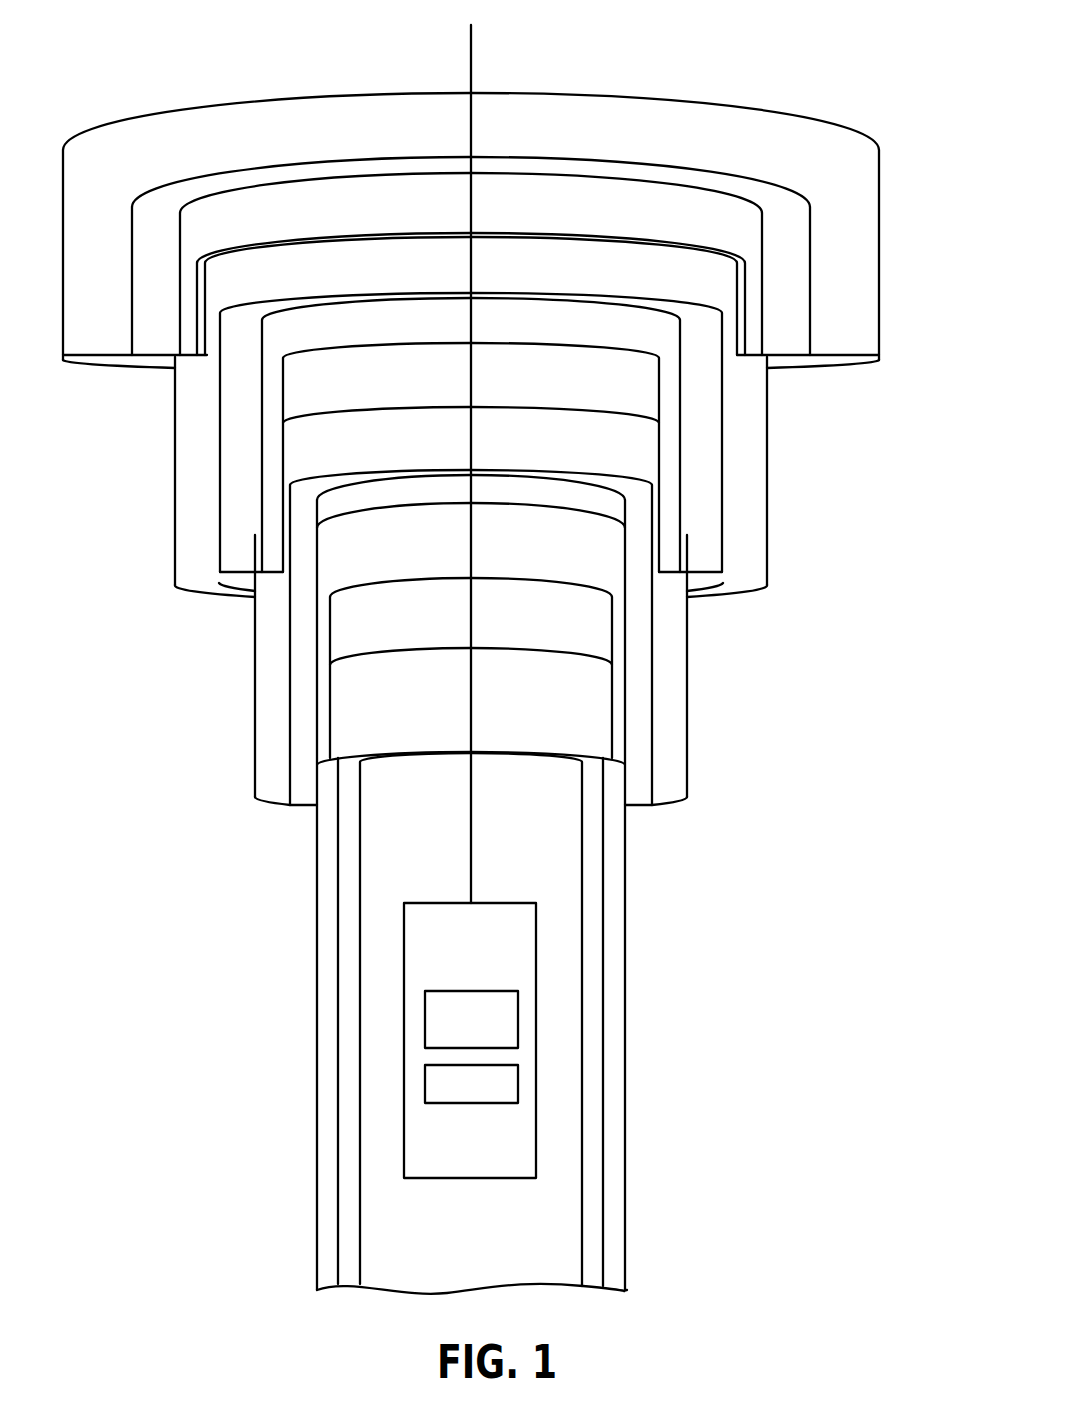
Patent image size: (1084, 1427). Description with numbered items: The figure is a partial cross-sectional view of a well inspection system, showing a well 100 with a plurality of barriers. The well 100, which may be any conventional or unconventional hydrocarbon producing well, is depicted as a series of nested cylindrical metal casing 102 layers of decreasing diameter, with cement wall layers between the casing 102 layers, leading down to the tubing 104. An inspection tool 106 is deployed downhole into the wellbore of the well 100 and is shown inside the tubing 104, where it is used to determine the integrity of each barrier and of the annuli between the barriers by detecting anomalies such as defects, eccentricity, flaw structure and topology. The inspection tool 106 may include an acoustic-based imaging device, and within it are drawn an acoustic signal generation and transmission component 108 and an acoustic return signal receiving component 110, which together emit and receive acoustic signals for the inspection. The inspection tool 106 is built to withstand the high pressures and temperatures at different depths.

The well 100 is at (852, 62).
The casing 102 is at (865, 271).
The tubing 104 is at (612, 1087).
The inspection tool 106 is at (536, 927).
The acoustic signal generation and transmission component 108 is at (471, 52).
The acoustic return signal receiving component 110 is at (425, 1090).